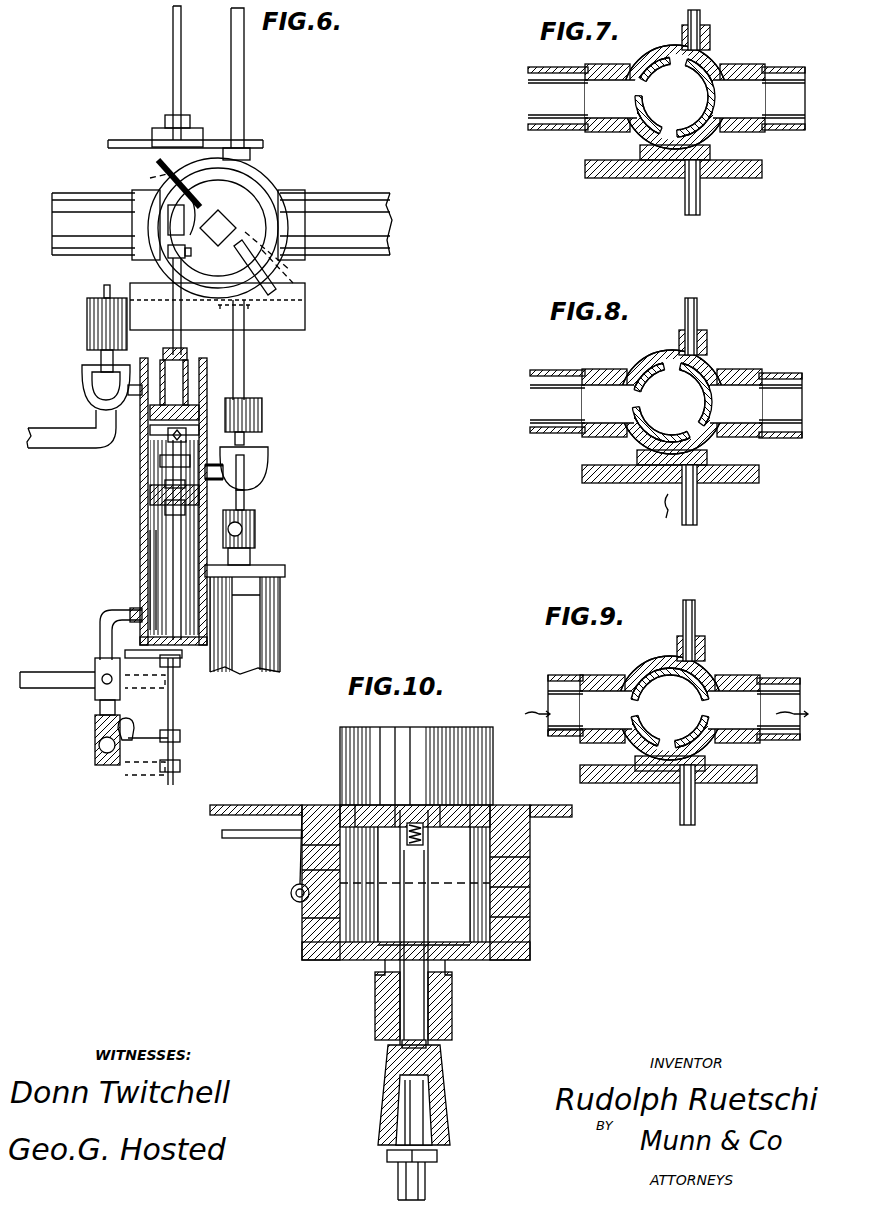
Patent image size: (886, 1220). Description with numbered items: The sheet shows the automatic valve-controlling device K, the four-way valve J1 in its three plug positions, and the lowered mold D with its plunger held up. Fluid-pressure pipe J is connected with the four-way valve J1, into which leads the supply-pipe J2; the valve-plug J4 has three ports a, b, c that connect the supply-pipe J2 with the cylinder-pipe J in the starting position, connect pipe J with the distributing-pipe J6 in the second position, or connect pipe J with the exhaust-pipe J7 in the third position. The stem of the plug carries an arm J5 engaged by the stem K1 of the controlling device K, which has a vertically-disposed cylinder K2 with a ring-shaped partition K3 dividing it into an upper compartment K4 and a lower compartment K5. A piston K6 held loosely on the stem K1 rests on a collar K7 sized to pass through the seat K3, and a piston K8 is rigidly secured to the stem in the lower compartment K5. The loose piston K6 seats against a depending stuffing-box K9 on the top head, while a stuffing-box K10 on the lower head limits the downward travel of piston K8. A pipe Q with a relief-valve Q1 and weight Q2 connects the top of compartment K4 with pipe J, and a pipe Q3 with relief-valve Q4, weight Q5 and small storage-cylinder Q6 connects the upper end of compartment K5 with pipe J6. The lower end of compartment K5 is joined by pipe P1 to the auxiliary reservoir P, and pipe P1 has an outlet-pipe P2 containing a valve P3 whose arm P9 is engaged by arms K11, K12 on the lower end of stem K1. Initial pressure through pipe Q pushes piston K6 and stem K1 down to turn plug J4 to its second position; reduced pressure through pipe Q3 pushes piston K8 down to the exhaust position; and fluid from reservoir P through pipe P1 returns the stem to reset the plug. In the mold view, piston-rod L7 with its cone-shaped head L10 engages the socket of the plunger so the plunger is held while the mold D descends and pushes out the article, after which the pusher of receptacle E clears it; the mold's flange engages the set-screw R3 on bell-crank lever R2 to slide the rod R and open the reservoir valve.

In FIG. 6, the fluid-pressure pipe J is at (90, 205).
In FIG. 7, the fluid-pressure pipe J is at (542, 98).
In FIG. 8, the fluid-pressure pipe J is at (542, 401).
In FIG. 9, the fluid-pressure pipe J is at (554, 699).
In FIG. 6, the four-way valve J1 is at (262, 180).
In FIG. 7, the four-way valve J1 is at (675, 96).
In FIG. 8, the four-way valve J1 is at (672, 406).
In FIG. 9, the four-way valve J1 is at (670, 705).
In FIG. 6, the supply-pipe J2 is at (245, 82).
In FIG. 7, the supply-pipe J2 is at (708, 25).
In FIG. 8, the supply-pipe J2 is at (708, 326).
In FIG. 9, the supply-pipe J2 is at (704, 623).
In FIG. 7, the valve-plug J4 is at (677, 97).
In FIG. 8, the valve-plug J4 is at (687, 389).
In FIG. 9, the valve-plug J4 is at (686, 693).
In FIG. 6, the arm J5 is at (196, 200).
In FIG. 6, the distributing-pipe J6 is at (244, 356).
In FIG. 7, the distributing-pipe J6 is at (671, 187).
In FIG. 8, the distributing-pipe J6 is at (695, 495).
In FIG. 9, the distributing-pipe J6 is at (667, 795).
In FIG. 6, the exhaust-pipe J7 is at (360, 205).
In FIG. 7, the exhaust-pipe J7 is at (783, 90).
In FIG. 8, the exhaust-pipe J7 is at (780, 393).
In FIG. 9, the exhaust-pipe J7 is at (782, 697).
In FIG. 7, the port a is at (680, 69).
In FIG. 8, the port a is at (672, 375).
In FIG. 9, the port a is at (659, 704).
In FIG. 7, the port b is at (647, 92).
In FIG. 8, the port b is at (639, 398).
In FIG. 9, the port b is at (666, 739).
In FIG. 7, the port c is at (668, 132).
In FIG. 8, the port c is at (689, 426).
In FIG. 9, the port c is at (700, 709).
In FIG. 6, the valve-controlling device K is at (140, 495).
In FIG. 10, the valve-controlling device K is at (340, 803).
In FIG. 6, the stem K1 is at (173, 88).
In FIG. 10, the stem K1 is at (424, 922).
In FIG. 6, the cylinder K2 is at (165, 484).
In FIG. 10, the cylinder K2 is at (440, 1082).
In FIG. 6, the ring-shaped partition K3 is at (160, 461).
In FIG. 6, the upper compartment K4 is at (187, 352).
In FIG. 6, the lower compartment K5 is at (150, 560).
In FIG. 6, the piston K6 is at (199, 410).
In FIG. 6, the collar K7 is at (199, 432).
In FIG. 6, the piston K8 is at (199, 500).
In FIG. 6, the stuffing-box K9 is at (188, 380).
In FIG. 6, the stuffing-box K10 is at (150, 612).
In FIG. 6, the arm K11 is at (148, 652).
In FIG. 6, the arm K12 is at (158, 736).
In FIG. 6, the pipe Q is at (60, 428).
In FIG. 6, the relief-valve Q1 is at (82, 380).
In FIG. 6, the weight Q2 is at (87, 333).
In FIG. 6, the pipe Q3 is at (244, 500).
In FIG. 6, the relief-valve Q4 is at (268, 468).
In FIG. 6, the weight Q5 is at (262, 412).
In FIG. 6, the storage-cylinder Q6 is at (255, 628).
In FIG. 6, the auxiliary storage-reservoir P is at (70, 676).
In FIG. 6, the pipe P1 is at (100, 613).
In FIG. 6, the outlet-pipe P2 is at (100, 720).
In FIG. 6, the valve P3 is at (96, 756).
In FIG. 6, the arm P9 is at (130, 721).
In FIG. 10, the mold-filling receptacle E is at (238, 800).
In FIG. 10, the mold D is at (416, 805).
In FIG. 10, the rod R is at (222, 836).
In FIG. 10, the bell-crank lever R2 is at (296, 887).
In FIG. 10, the set-screw R3 is at (304, 900).
In FIG. 10, the piston-rod L7 is at (425, 1178).
In FIG. 10, the cone-shaped head L10 is at (414, 1122).